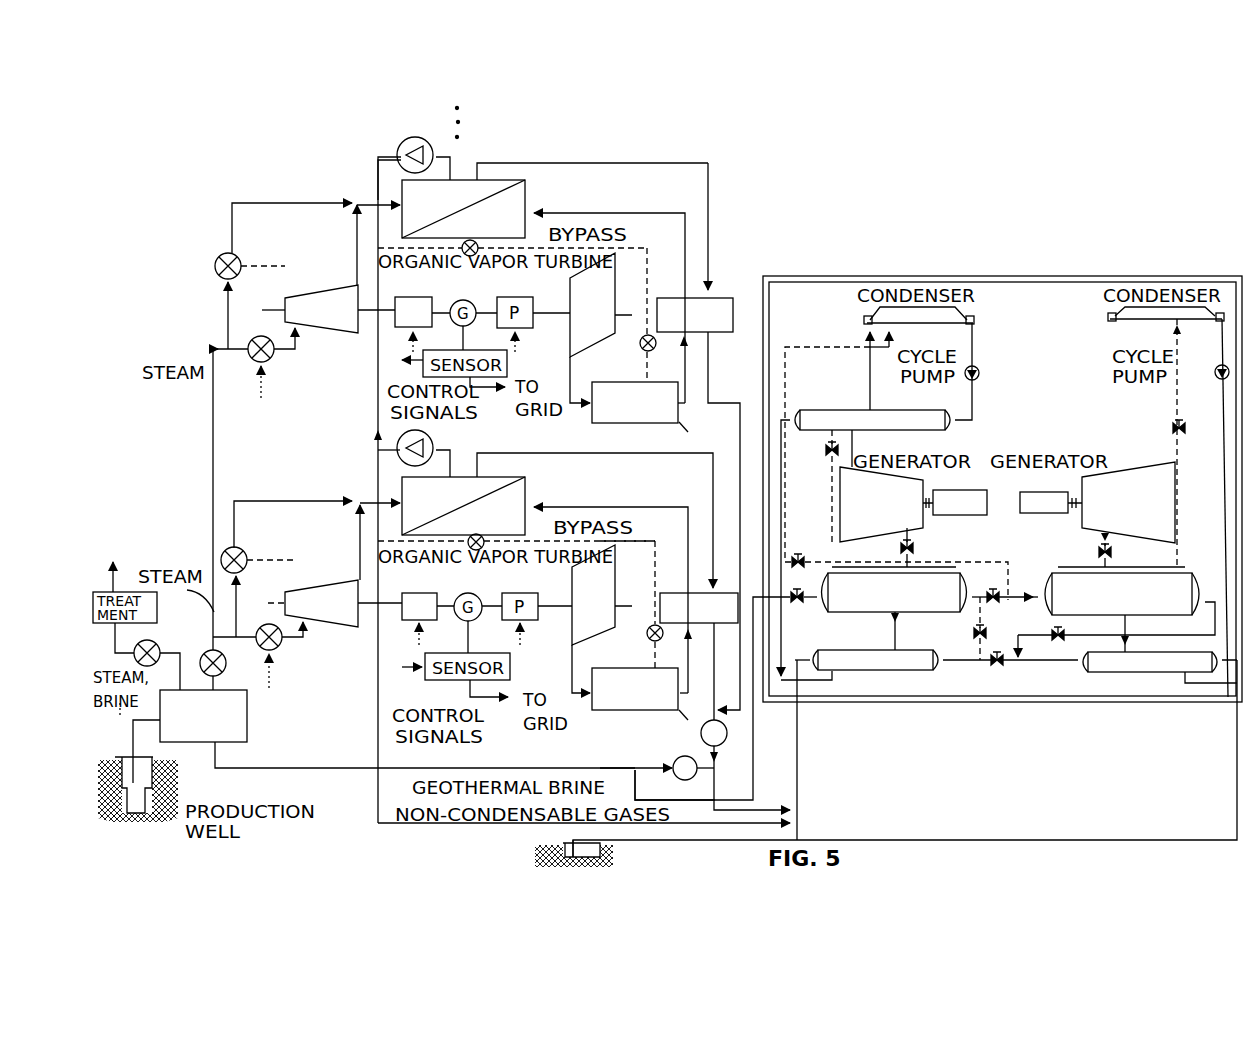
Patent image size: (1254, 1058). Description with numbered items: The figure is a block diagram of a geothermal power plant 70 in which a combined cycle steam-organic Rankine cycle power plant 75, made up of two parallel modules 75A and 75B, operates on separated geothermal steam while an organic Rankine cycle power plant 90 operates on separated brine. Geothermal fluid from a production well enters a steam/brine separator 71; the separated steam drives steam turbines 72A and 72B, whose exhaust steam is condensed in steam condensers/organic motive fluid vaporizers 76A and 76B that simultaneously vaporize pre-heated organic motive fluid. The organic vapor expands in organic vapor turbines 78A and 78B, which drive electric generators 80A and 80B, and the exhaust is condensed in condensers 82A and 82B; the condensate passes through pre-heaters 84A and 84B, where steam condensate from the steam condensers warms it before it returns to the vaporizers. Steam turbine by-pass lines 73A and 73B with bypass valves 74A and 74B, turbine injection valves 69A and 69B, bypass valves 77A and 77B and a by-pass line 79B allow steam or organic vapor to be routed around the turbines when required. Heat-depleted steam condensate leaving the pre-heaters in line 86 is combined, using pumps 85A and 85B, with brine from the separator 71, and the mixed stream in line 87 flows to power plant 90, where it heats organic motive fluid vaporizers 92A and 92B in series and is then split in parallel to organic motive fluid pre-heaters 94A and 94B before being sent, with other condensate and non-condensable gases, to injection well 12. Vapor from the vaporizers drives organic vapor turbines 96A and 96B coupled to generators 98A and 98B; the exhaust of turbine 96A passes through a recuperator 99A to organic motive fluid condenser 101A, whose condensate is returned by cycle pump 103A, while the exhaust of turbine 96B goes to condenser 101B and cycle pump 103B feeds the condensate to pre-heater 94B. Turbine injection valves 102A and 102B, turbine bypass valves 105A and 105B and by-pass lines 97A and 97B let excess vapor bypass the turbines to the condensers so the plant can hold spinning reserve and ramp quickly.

The injection well 12 is at (515, 848).
The turbine injection valve 69A is at (461, 247).
The turbine injection valve 69B is at (467, 544).
The power plant 70 is at (725, 157).
The steam/geothermal liquid or brine separator 71 is at (252, 720).
The steam turbine 72A is at (357, 286).
The steam turbine 72B is at (358, 581).
The by-pass line 73A is at (333, 200).
The by-pass line 73B is at (337, 500).
The bypass valve 74A is at (236, 256).
The bypass valve 74B is at (240, 550).
The combined cycle steam-organic Rankine cycle power plant 75 is at (392, 158).
The combined cycle steam-organic Rankine cycle power plant module 75A is at (522, 163).
The combined cycle steam-organic Rankine cycle power plant module 75B is at (497, 453).
The steam condenser/organic motive fluid vaporizer 76A is at (524, 182).
The steam condenser/organic motive fluid vaporizer 76B is at (524, 478).
The turbine bypass valve 77A is at (628, 314).
The turbine bypass valve 77B is at (633, 604).
The organic vapor turbine 78A is at (628, 252).
The organic vapor turbine 78B is at (615, 552).
The by-pass line 79B is at (640, 546).
The electric generator 80A is at (462, 300).
The electric generator 80B is at (467, 594).
The condenser 82A is at (647, 381).
The condenser 82B is at (657, 668).
The pre-heater 84A is at (668, 297).
The pre-heater 84B is at (680, 593).
The pump 85A is at (745, 716).
The pump 85B is at (688, 757).
The line 86 is at (647, 768).
The line 87 is at (695, 800).
The organic Rankine cycle power plant 90 is at (800, 272).
The organic motive fluid vaporizer 92A is at (832, 562).
The organic motive fluid vaporizer 92B is at (1058, 566).
The organic motive fluid pre-heater 94A is at (827, 648).
The organic motive fluid pre-heater 94B is at (1118, 652).
The organic vapor turbine 96A is at (854, 499).
The organic vapor turbine 96B is at (1172, 465).
The by-pass line 97A is at (786, 365).
The by-pass line 97B is at (1205, 367).
The generator 98A is at (977, 490).
The generator 98B is at (1060, 492).
The recuperator 99A is at (937, 408).
The organic motive fluid condenser 101A is at (960, 318).
The organic motive fluid condenser 101B is at (1113, 314).
The turbine injection valve 102A is at (917, 548).
The turbine injection valve 102B is at (1113, 552).
The cycle pump 103A is at (979, 374).
The cycle pump 103B is at (1216, 378).
The turbine bypass valve 105A is at (809, 486).
The turbine bypass valve 105B is at (1153, 421).